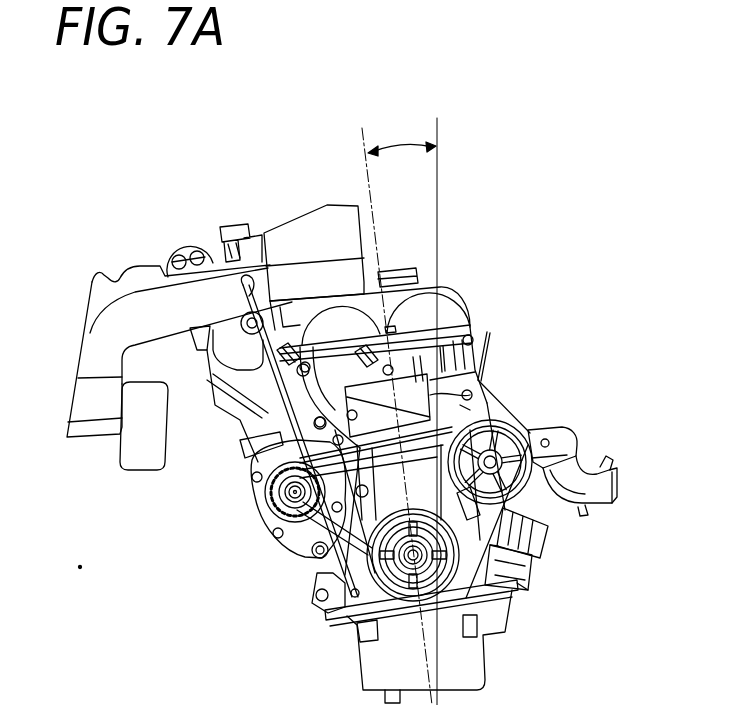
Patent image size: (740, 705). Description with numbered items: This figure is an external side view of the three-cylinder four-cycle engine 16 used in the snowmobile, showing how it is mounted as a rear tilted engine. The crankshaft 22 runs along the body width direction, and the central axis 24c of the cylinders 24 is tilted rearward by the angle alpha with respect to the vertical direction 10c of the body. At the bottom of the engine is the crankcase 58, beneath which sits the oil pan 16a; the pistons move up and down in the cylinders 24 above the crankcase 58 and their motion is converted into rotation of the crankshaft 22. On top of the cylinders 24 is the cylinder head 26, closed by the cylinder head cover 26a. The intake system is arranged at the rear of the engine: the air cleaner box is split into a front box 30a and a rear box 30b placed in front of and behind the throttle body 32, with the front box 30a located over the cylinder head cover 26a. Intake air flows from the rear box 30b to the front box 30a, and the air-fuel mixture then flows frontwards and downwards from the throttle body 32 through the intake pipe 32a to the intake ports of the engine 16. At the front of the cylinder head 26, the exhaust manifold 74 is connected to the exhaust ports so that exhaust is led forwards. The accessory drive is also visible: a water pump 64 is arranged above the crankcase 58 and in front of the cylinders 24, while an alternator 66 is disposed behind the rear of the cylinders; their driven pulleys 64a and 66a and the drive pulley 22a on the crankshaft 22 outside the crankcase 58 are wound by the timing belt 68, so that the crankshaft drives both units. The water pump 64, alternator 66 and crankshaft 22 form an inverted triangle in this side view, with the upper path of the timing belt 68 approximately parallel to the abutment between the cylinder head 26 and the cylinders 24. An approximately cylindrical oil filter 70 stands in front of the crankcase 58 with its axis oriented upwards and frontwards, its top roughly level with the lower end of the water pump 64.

The vertical direction 10c is at (441, 137).
The four-cycle engine 16 is at (502, 340).
The oil pan 16a is at (473, 648).
The crankshaft 22 is at (350, 605).
The drive pulley 22a is at (367, 627).
The cylinder 24 is at (462, 420).
The central axis 24c is at (369, 190).
The cylinder head 26 is at (430, 330).
The cylinder head cover 26a is at (449, 284).
The front box 30a is at (374, 238).
The rear box 30b is at (100, 292).
The throttle body 32 is at (195, 245).
The intake pipe 32a is at (218, 378).
The crankcase 58 is at (352, 560).
The water pump 64 is at (506, 430).
The driven pulley 64a is at (528, 428).
The alternator 66 is at (280, 522).
The driven pulley 66a is at (280, 498).
The timing belt 68 is at (537, 550).
The oil filter 70 is at (527, 549).
The exhaust manifold 74 is at (600, 484).